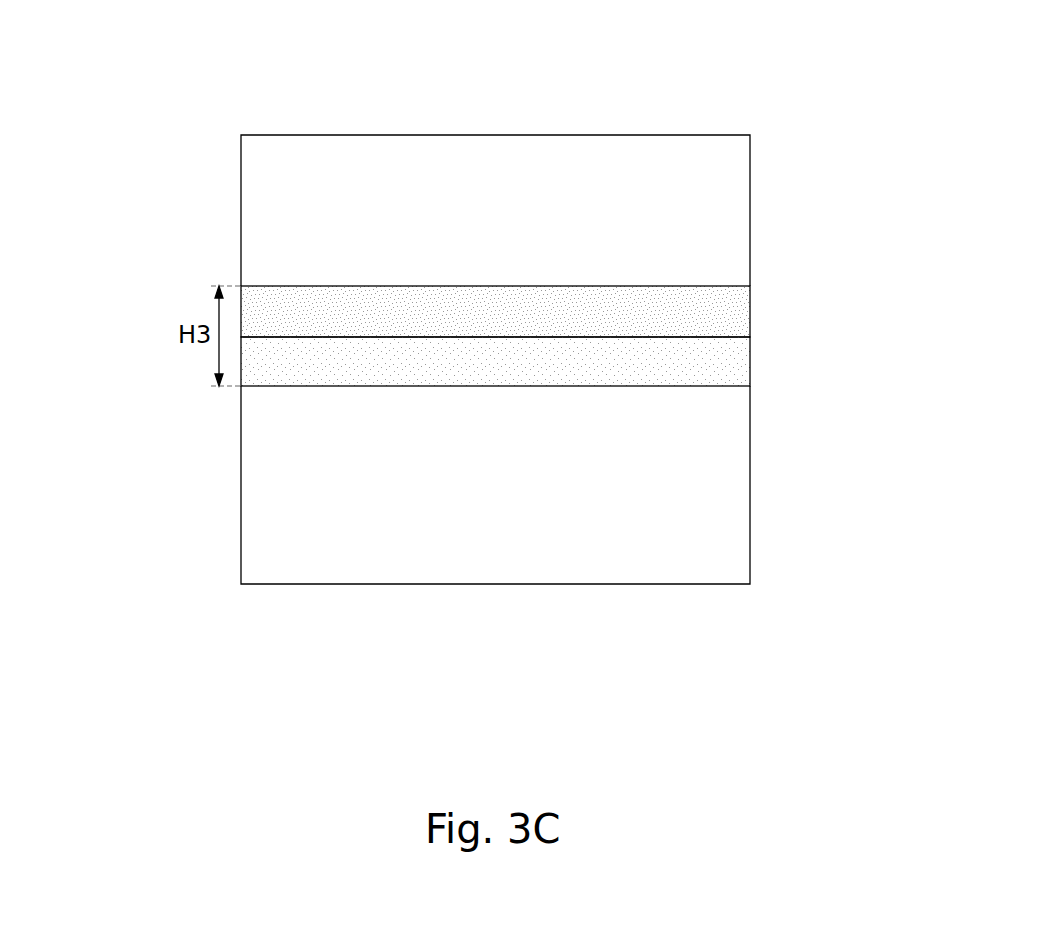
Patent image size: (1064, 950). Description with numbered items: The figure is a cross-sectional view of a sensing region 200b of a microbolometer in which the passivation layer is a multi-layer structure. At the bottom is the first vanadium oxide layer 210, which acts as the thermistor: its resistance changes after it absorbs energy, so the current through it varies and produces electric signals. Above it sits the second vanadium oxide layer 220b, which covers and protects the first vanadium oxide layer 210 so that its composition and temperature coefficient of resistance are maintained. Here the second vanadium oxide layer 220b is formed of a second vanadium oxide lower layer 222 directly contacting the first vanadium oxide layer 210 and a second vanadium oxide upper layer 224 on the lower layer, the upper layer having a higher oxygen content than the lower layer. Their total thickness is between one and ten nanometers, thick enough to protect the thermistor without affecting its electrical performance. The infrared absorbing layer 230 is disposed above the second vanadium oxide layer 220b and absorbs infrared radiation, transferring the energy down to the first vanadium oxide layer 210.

The sensing region 200b is at (634, 306).
The infrared absorbing layer 230 is at (750, 202).
The second vanadium oxide layer 220b is at (603, 336).
The second vanadium oxide upper layer 224 is at (750, 312).
The second vanadium oxide lower layer 222 is at (561, 361).
The first vanadium oxide layer 210 is at (750, 508).